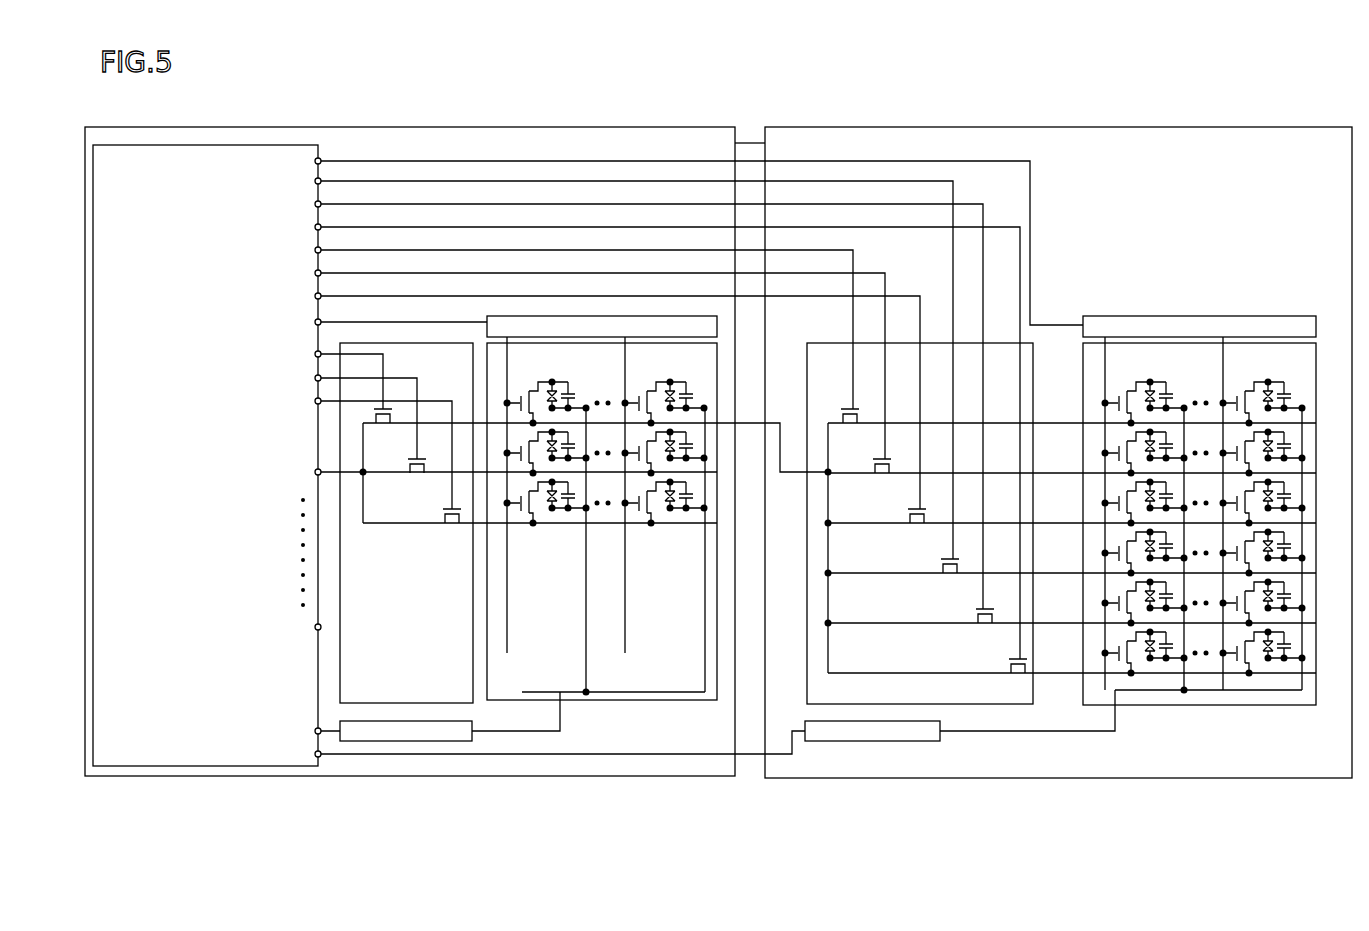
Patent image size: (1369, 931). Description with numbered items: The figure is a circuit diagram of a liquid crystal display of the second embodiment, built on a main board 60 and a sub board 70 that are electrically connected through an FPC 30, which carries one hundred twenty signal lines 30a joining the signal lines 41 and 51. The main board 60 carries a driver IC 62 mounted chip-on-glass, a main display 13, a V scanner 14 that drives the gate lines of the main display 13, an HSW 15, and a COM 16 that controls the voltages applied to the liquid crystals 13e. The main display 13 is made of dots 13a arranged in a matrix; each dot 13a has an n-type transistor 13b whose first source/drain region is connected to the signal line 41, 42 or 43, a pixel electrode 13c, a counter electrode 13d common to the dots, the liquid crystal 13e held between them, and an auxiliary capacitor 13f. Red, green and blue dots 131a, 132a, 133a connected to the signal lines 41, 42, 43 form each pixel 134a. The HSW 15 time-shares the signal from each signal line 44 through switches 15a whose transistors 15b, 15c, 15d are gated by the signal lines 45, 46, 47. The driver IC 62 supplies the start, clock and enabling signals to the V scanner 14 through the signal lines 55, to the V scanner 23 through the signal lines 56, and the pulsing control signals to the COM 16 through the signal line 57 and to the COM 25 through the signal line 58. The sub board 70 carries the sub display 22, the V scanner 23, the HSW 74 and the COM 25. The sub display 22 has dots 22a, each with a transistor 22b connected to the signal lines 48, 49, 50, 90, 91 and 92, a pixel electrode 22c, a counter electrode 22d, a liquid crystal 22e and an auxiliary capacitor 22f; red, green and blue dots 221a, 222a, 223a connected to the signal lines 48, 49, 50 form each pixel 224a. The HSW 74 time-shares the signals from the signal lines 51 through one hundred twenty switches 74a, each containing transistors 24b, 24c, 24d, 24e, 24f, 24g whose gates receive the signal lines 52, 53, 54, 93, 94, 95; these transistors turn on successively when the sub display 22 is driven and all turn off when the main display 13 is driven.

The FPC 30 is at (748, 143).
The sub board 70 is at (1350, 127).
The main board 60 is at (248, 127).
The driver IC 62 is at (296, 145).
The signal line 56 is at (815, 161).
The signal line 93 is at (905, 420).
The signal line 94 is at (930, 470).
The signal line 95 is at (958, 520).
The signal line 52 is at (851, 300).
The signal line 53 is at (882, 340).
The signal line 54 is at (912, 380).
The signal line 90 is at (1030, 330).
The signal line 45 is at (383, 400).
The signal line 47 is at (418, 450).
The signal line 42 is at (453, 500).
The signal line 55 is at (360, 420).
The signal line 48 is at (1083, 400).
The signal line 46 is at (400, 375).
The signal line 43 is at (440, 398).
The signal line 41 is at (490, 470).
The signal line 92 is at (983, 570).
The signal line 91 is at (1012, 620).
The signal line 50 is at (1047, 420).
The signal line 49 is at (1065, 480).
The V scanner 14 is at (708, 316).
The V scanner 23 is at (1312, 316).
The HSW 15 is at (365, 343).
The HSW 74 is at (805, 385).
The n-type transistor 15b is at (385, 418).
The n-type transistor 15c is at (419, 468).
The n-type transistor 15d is at (454, 518).
The switch 15a is at (378, 820).
The n-type transistor 24b is at (852, 418).
The n-type transistor 24c is at (884, 468).
The n-type transistor 24d is at (919, 518).
The n-type transistor 24e is at (952, 568).
The n-type transistor 24f is at (987, 618).
The n-type transistor 24g is at (1020, 668).
The switch 74a is at (845, 820).
The main display 13 is at (715, 700).
The sub display 22 is at (1316, 705).
The COM 16 is at (345, 741).
The COM 25 is at (812, 741).
The signal line 57 is at (330, 745).
The signal line 44 is at (325, 735).
The signal line 58 is at (737, 776).
The signal line 51 is at (768, 770).
The signal line 30a is at (752, 560).
The pixel 134a is at (690, 66).
The dot 133a is at (642, 485).
The dot 132a is at (647, 438).
The dot 131a is at (658, 370).
The pixel 224a is at (1285, 66).
The dot 223a is at (1242, 485).
The dot 222a is at (1247, 437).
The dot 221a is at (1258, 370).
The n-type transistor 13b is at (518, 510).
The pixel electrode 13c is at (546, 495).
The counter electrode 13d is at (552, 492).
The auxiliary capacitor 13f is at (570, 498).
The liquid crystal 13e is at (548, 490).
The dot 13a is at (508, 820).
The n-type transistor 22b is at (1108, 658).
The pixel electrode 22c is at (1140, 650).
The counter electrode 22d is at (1150, 645).
The auxiliary capacitor 22f is at (1168, 642).
The liquid crystal 22e is at (1150, 640).
The dot 22a is at (1107, 820).